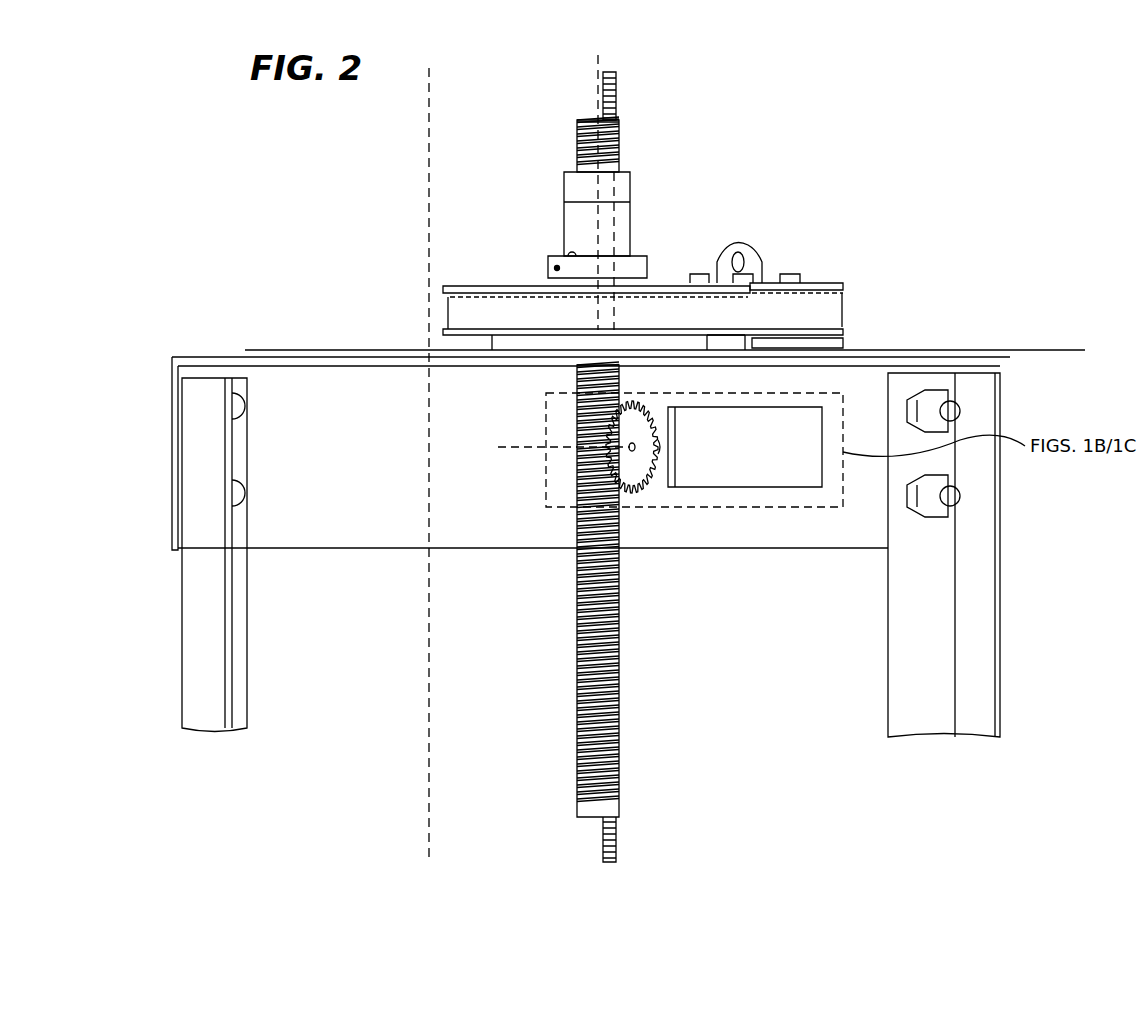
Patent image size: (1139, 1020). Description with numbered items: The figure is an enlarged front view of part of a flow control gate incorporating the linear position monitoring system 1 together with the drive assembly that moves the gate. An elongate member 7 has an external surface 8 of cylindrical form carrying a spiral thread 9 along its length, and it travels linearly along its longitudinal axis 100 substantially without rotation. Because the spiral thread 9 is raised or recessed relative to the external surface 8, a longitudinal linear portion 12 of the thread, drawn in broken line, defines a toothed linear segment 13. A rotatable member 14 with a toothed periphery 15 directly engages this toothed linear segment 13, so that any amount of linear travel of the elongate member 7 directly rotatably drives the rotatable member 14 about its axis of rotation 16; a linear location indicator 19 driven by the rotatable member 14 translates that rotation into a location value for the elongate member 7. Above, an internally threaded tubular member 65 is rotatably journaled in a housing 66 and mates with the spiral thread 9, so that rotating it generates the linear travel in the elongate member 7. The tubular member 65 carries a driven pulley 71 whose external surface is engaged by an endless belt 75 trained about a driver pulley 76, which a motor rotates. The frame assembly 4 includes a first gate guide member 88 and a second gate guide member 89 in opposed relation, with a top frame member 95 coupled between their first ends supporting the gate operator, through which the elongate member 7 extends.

The linear position monitoring system 1 is at (778, 128).
The frame assembly 4 is at (392, 92).
The elongate member 7 is at (574, 120).
The external surface 8 is at (578, 158).
The spiral thread 9 is at (578, 130).
The longitudinal linear portion 12 is at (616, 85).
The toothed linear segment 13 is at (616, 120).
The rotatable member 14 is at (633, 468).
The toothed periphery 15 is at (652, 485).
The axis of rotation 16 is at (510, 447).
The linear location indicator 19 is at (694, 450).
The internally threaded tubular member 65 is at (632, 212).
The housing 66 is at (500, 347).
The driven pulley 71 is at (500, 286).
The endless belt 75 is at (838, 307).
The driver pulley 76 is at (815, 283).
The first gate guide member 88 is at (215, 598).
The second gate guide member 89 is at (963, 600).
The top frame member 95 is at (330, 400).
The longitudinal axis 100 is at (600, 182).